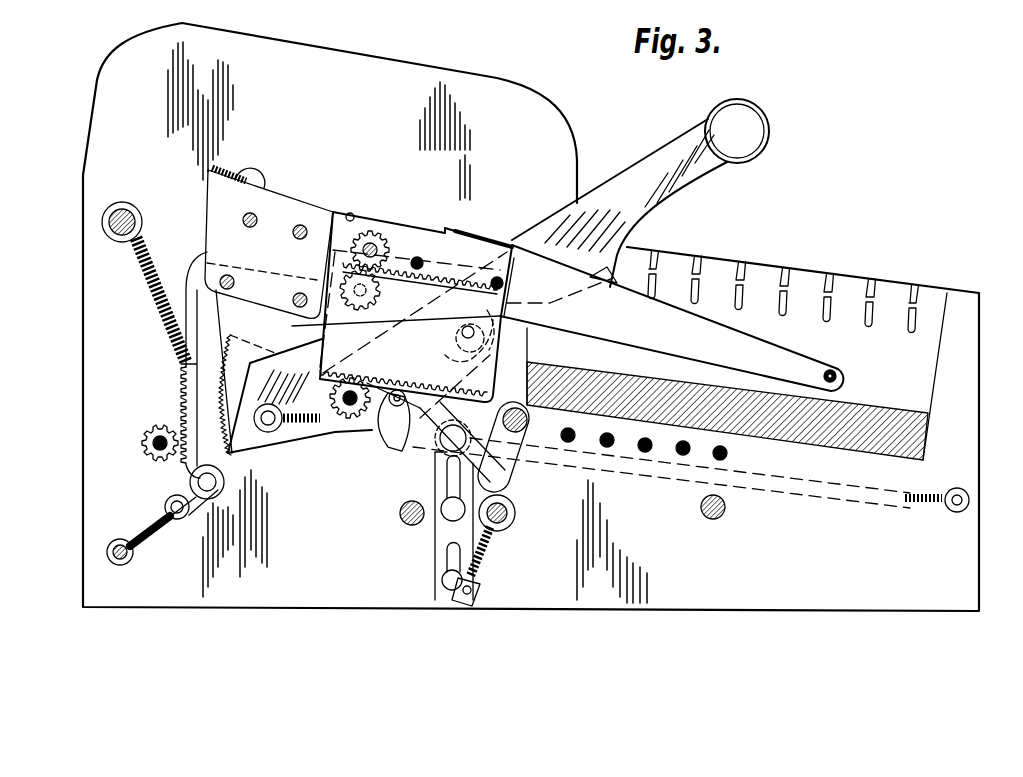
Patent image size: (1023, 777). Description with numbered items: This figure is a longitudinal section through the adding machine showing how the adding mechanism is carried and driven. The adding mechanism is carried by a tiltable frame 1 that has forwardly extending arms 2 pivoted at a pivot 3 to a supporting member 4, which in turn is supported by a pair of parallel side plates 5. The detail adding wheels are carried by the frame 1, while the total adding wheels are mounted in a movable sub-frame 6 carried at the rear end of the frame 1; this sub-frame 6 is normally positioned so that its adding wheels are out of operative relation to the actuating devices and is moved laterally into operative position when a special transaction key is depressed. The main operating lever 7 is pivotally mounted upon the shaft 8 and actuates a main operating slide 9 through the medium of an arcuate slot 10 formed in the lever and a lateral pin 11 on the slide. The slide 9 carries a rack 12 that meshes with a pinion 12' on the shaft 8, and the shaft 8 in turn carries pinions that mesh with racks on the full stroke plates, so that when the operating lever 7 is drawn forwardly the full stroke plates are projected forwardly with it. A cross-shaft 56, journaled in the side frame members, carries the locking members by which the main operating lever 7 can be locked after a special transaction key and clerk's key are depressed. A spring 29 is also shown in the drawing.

The tiltable frame 1 is at (383, 222).
The forwardly extending arms 2 is at (773, 352).
The pivot 3 is at (838, 374).
The supporting member 4 is at (925, 430).
The side plates 5 is at (95, 250).
The movable sub-frame 6 is at (262, 199).
The main operating lever 7 is at (643, 183).
The shaft 8 is at (350, 416).
The main operating slide 9 is at (386, 329).
The arcuate slot 10 is at (462, 333).
The lateral pin 11 is at (490, 320).
The rack 12 is at (448, 336).
The pinion 12' is at (389, 435).
The spring 29 is at (127, 202).
The cross-shaft 56 is at (533, 423).